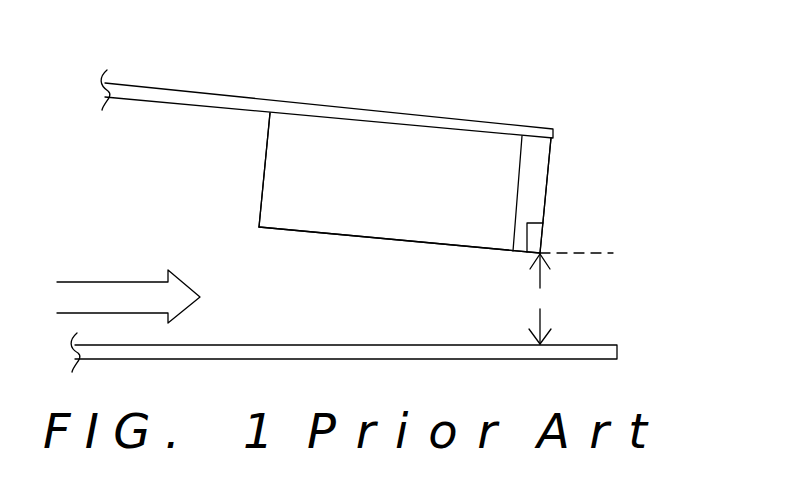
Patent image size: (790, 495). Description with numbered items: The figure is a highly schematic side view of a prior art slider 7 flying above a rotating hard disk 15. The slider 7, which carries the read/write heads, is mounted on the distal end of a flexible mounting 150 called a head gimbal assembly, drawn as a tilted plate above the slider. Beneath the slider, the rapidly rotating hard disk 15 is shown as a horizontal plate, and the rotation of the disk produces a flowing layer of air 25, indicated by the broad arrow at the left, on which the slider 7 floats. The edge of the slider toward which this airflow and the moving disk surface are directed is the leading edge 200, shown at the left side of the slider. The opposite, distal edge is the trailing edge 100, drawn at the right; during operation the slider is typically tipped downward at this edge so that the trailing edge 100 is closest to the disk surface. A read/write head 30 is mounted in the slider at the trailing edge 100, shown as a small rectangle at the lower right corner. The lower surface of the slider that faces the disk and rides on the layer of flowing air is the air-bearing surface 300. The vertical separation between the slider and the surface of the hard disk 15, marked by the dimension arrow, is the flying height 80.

The flexible mounting 150 is at (210, 100).
The slider 7 is at (407, 143).
The leading edge 200 is at (265, 165).
The trailing edge 100 is at (549, 169).
The air-bearing surface 300 is at (390, 241).
The read/write head 30 is at (530, 238).
The flying height 80 is at (568, 298).
The hard disk 15 is at (607, 350).
The flowing layer of air 25 is at (111, 282).